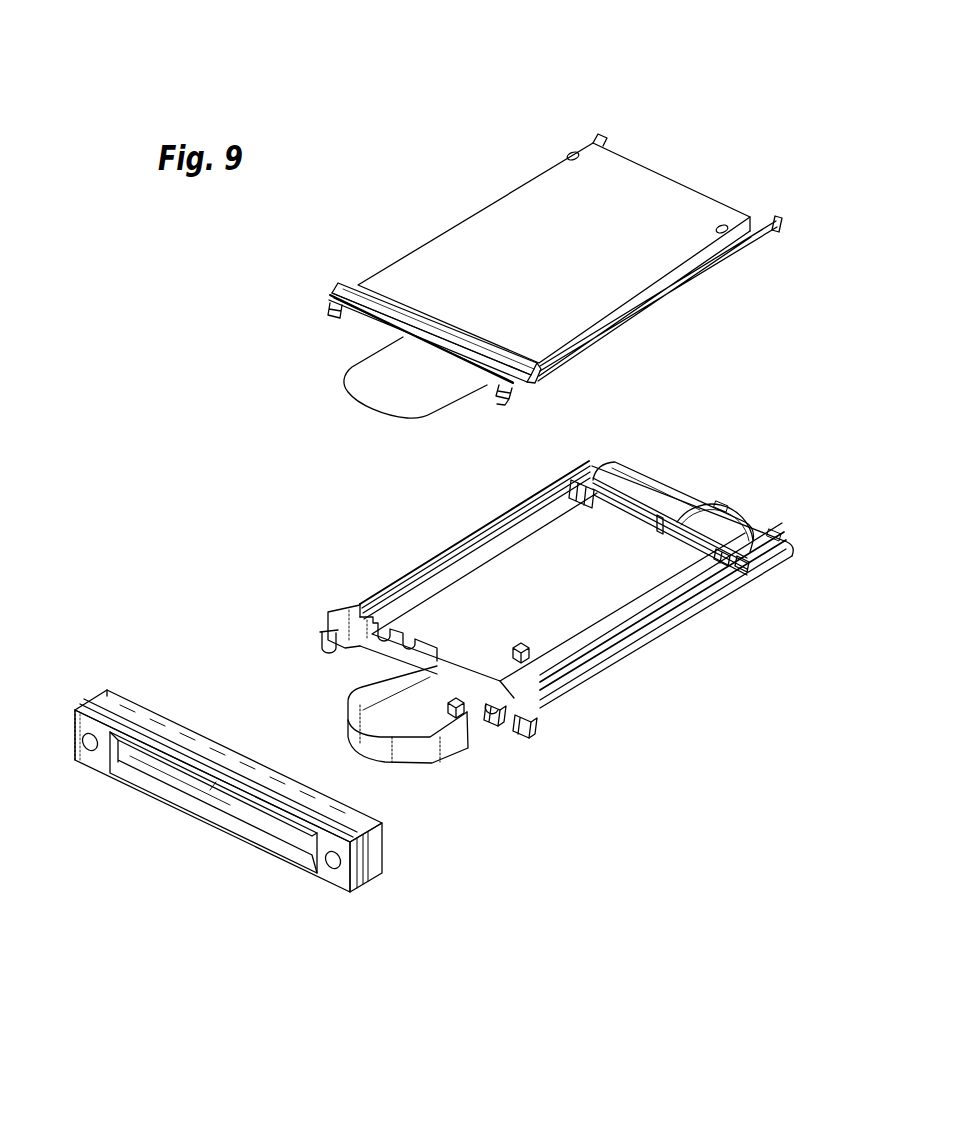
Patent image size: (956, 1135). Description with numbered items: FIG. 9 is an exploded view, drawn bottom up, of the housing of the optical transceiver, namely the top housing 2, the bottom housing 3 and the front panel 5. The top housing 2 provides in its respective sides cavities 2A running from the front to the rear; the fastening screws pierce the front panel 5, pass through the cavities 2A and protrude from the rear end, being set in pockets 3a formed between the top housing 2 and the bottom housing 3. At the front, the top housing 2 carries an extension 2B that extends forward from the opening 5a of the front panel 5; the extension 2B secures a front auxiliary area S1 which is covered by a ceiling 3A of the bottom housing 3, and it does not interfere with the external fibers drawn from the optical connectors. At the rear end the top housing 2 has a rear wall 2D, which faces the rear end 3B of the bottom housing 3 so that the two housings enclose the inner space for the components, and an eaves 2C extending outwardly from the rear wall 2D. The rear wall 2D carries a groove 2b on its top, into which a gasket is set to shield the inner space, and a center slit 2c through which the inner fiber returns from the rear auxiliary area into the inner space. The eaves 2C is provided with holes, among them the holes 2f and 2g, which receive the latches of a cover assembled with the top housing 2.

The top housing 2 is at (537, 600).
The cavities 2A is at (473, 540).
The extension 2B is at (430, 755).
The eaves 2C is at (660, 493).
The rear wall 2D is at (706, 464).
The groove 2b is at (611, 487).
The center slit 2c is at (690, 503).
The hole 2f is at (777, 533).
The hole 2g is at (723, 507).
The bottom housing 3 is at (523, 215).
The ceiling 3A is at (377, 377).
The rear end 3B is at (670, 182).
The pockets 3a is at (330, 310).
The front panel 5 is at (228, 833).
The opening 5a is at (263, 817).
The front auxiliary area S1 is at (400, 703).